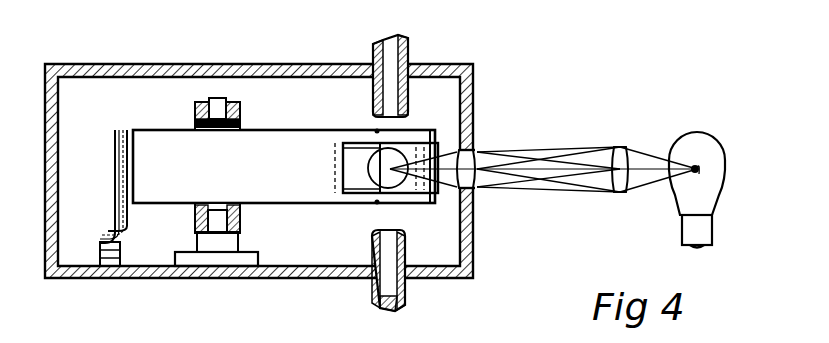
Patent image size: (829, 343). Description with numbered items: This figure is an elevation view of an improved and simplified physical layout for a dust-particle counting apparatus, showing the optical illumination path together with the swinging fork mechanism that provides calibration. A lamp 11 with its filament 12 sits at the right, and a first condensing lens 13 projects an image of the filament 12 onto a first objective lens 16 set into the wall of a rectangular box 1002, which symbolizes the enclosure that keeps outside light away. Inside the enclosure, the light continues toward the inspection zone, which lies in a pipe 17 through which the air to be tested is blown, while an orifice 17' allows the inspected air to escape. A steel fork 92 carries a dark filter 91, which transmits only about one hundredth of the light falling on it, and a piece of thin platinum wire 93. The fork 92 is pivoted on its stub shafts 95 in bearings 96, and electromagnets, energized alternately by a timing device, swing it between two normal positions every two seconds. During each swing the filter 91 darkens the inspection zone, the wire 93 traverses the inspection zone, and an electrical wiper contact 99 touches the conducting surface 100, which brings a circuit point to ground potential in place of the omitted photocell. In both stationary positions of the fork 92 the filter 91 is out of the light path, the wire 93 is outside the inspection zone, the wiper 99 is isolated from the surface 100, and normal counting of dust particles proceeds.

The rectangular box 1002 is at (475, 245).
The dark filter 91 is at (472, 121).
The steel fork 92 is at (283, 130).
The piece of thin platinum wire 93 is at (348, 143).
The stub shafts 95 is at (217, 100).
The bearings 96 is at (200, 102).
The electrical wiper contact 99 is at (110, 235).
The conducting surface 100 is at (90, 242).
The pipe 17 is at (415, 273).
The orifice 17' is at (420, 62).
The first objective lens 16 is at (480, 186).
The first condensing lens 13 is at (620, 147).
The lamp 11 is at (688, 140).
The filament 12 is at (700, 172).